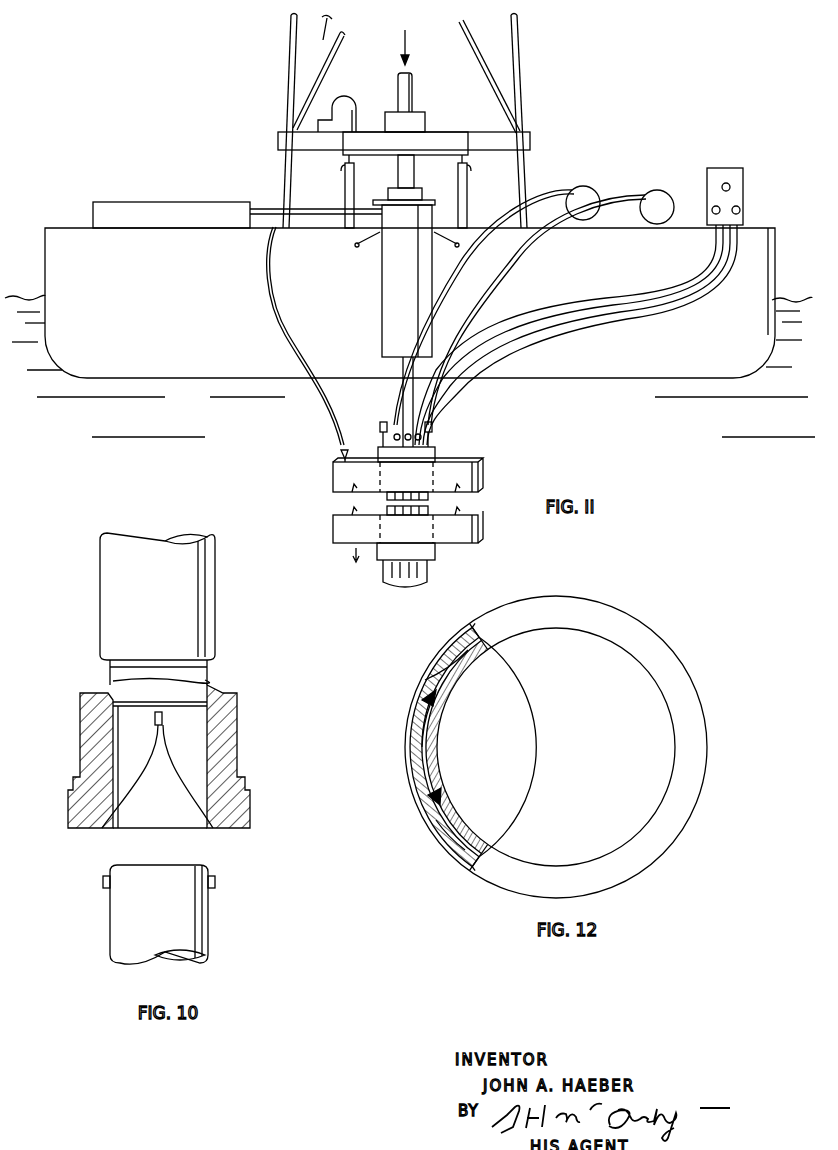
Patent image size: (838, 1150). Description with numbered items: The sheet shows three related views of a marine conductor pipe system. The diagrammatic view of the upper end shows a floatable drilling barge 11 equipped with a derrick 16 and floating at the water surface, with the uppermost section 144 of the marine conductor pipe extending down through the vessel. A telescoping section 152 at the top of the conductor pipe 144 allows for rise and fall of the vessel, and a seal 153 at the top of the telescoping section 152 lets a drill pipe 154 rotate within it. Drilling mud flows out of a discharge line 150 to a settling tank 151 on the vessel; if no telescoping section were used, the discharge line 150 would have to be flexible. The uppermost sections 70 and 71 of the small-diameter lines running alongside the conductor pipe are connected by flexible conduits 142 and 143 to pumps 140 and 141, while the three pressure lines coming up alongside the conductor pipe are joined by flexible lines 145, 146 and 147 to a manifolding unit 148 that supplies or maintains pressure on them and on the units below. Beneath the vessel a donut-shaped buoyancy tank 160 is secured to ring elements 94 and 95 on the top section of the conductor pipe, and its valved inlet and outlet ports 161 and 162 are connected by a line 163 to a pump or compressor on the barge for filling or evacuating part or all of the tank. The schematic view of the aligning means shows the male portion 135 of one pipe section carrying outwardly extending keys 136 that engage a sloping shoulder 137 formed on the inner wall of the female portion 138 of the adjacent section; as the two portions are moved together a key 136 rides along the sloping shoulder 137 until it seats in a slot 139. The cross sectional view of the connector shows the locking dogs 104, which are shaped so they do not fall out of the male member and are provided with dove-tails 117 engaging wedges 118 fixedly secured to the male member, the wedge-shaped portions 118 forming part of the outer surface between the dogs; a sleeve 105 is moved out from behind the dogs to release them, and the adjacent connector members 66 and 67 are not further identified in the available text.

In FIG. 11, the drilling barge 11 is at (238, 292).
In FIG. 11, the derrick 16 is at (522, 62).
In FIG. 12, the outer ring member 66 is at (421, 700).
In FIG. 12, the inner seal ring 67 is at (464, 671).
In FIG. 11, the line 70 is at (380, 433).
In FIG. 11, the line 71 is at (432, 433).
In FIG. 11, the ring element 94 is at (436, 458).
In FIG. 11, the ring element 95 is at (434, 551).
In FIG. 12, the locking dog 104 is at (424, 762).
In FIG. 12, the sleeve 105 is at (456, 832).
In FIG. 12, the dove-tail 117 is at (428, 703).
In FIG. 12, the wedge 118 is at (437, 803).
In FIG. 10, the male portion 135 is at (198, 941).
In FIG. 10, the key 136 is at (216, 882).
In FIG. 10, the sloping shoulder 137 is at (189, 786).
In FIG. 10, the female portion 138 is at (225, 706).
In FIG. 10, the slot 139 is at (163, 720).
In FIG. 11, the pump 140 is at (586, 196).
In FIG. 11, the sheave 141 is at (662, 196).
In FIG. 11, the conduit 142 is at (488, 223).
In FIG. 11, the conduit 143 is at (487, 280).
In FIG. 11, the marine conductor pipe 144 is at (400, 391).
In FIG. 11, the flexible line 145 is at (538, 325).
In FIG. 11, the flexible line 146 is at (596, 321).
In FIG. 11, the flexible line 147 is at (560, 338).
In FIG. 11, the manifolding unit 148 is at (717, 172).
In FIG. 11, the discharge line 150 is at (301, 212).
In FIG. 11, the settling tank 151 is at (121, 208).
In FIG. 11, the telescoping section 152 is at (413, 273).
In FIG. 11, the seal 153 is at (417, 192).
In FIG. 11, the drill pipe 154 is at (413, 100).
In FIG. 11, the buoyancy tank 160 is at (341, 481).
In FIG. 11, the inlet port 161 is at (341, 457).
In FIG. 11, the outlet port 162 is at (341, 547).
In FIG. 11, the line 163 is at (278, 309).